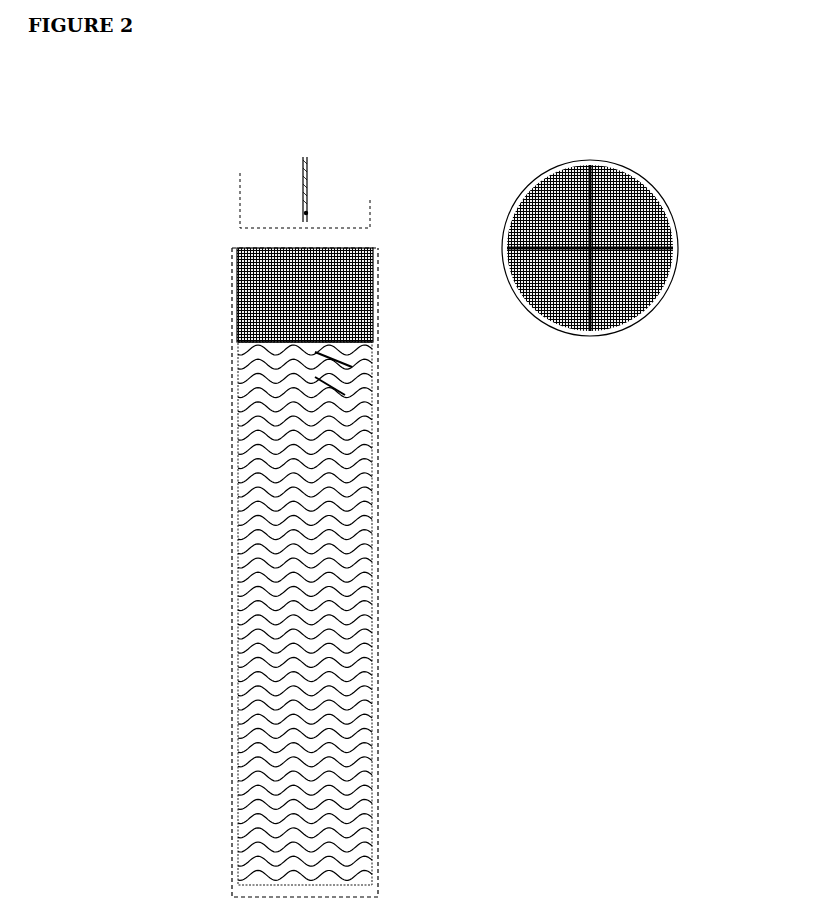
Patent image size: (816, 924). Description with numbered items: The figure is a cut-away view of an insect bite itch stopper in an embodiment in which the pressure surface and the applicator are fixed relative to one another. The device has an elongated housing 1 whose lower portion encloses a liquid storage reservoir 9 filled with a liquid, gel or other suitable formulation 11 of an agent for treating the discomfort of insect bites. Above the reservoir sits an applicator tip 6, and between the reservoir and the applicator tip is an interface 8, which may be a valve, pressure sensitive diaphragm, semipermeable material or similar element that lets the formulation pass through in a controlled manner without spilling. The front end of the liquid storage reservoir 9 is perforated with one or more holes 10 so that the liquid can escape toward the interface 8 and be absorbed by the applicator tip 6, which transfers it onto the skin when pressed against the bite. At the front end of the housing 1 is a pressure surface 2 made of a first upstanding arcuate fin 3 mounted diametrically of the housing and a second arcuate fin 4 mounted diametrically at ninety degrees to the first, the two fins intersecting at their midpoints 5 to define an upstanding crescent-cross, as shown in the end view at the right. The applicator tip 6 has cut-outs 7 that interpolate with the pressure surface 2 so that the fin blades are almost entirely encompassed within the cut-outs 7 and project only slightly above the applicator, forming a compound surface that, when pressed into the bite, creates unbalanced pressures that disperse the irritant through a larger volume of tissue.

The housing 1 is at (377, 265).
The pressure surface 2 is at (260, 170).
The first upstanding arcuate fin 3 is at (303, 157).
The second arcuate fin 4 is at (306, 212).
The midpoints of the fins 5 is at (592, 247).
The applicator tip 6 is at (350, 295).
The cut-outs 7 is at (307, 213).
The interface 8 is at (330, 342).
The liquid storage reservoir 9 is at (345, 395).
The holes 10 is at (352, 367).
The formulation 11 is at (310, 610).